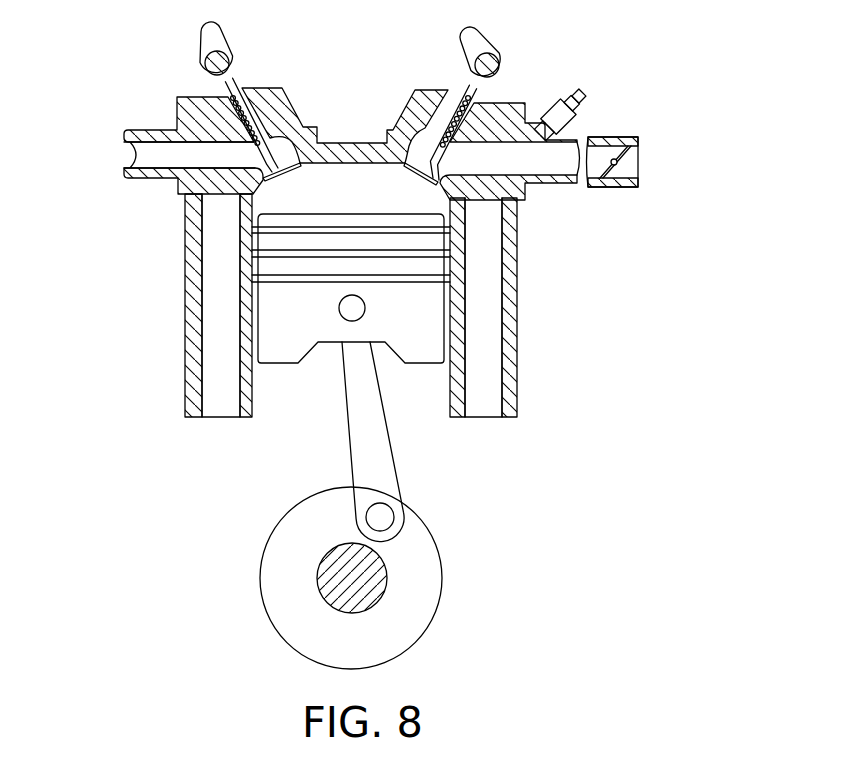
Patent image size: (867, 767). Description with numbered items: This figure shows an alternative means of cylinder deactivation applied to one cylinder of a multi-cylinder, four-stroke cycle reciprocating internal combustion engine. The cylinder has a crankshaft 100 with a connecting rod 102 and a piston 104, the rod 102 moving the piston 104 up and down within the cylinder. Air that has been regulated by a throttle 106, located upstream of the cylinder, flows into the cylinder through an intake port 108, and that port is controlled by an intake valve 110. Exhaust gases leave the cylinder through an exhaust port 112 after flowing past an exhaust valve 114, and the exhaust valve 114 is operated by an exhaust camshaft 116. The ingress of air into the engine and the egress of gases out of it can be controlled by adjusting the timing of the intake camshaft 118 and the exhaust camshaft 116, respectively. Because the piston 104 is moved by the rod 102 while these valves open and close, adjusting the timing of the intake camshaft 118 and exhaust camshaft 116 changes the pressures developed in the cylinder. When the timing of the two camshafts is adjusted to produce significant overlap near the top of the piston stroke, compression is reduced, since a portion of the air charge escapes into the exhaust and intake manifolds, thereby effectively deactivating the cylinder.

The crankshaft 100 is at (413, 565).
The connecting rod 102 is at (362, 437).
The piston 104 is at (432, 312).
The throttle 106 is at (633, 163).
The intake port 108 is at (580, 133).
The intake valve 110 is at (470, 95).
The exhaust port 112 is at (125, 147).
The exhaust valve 114 is at (242, 80).
The exhaust camshaft 116 is at (200, 60).
The intake camshaft 118 is at (460, 57).